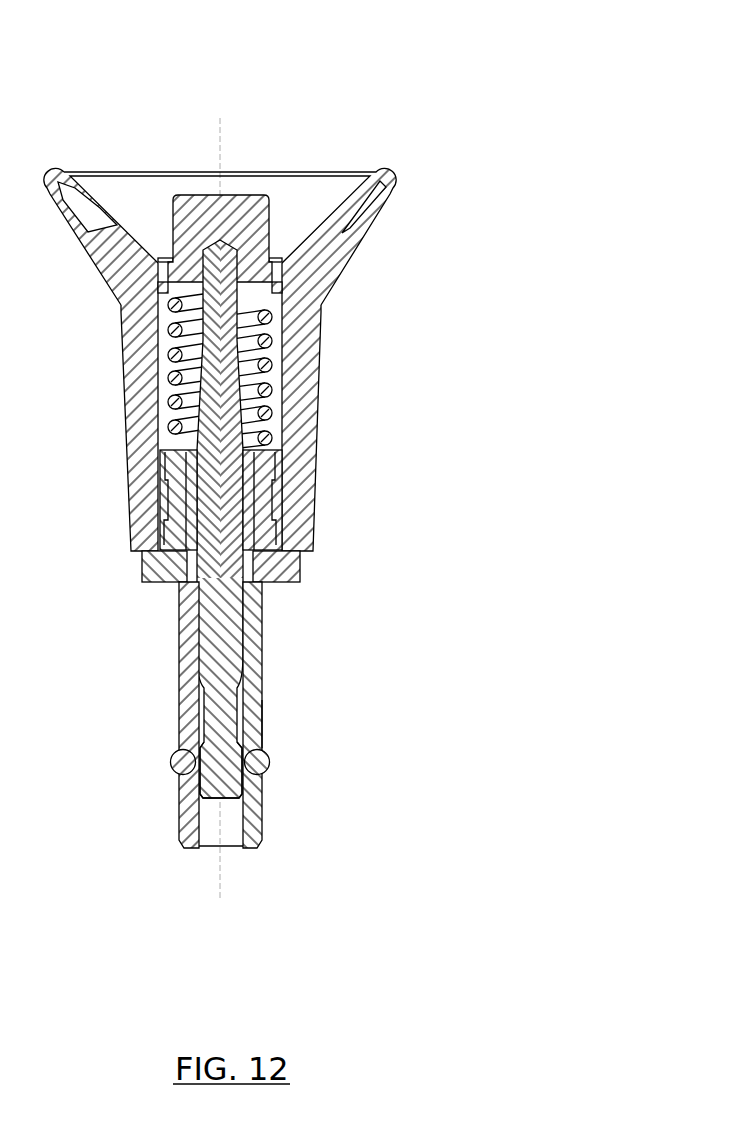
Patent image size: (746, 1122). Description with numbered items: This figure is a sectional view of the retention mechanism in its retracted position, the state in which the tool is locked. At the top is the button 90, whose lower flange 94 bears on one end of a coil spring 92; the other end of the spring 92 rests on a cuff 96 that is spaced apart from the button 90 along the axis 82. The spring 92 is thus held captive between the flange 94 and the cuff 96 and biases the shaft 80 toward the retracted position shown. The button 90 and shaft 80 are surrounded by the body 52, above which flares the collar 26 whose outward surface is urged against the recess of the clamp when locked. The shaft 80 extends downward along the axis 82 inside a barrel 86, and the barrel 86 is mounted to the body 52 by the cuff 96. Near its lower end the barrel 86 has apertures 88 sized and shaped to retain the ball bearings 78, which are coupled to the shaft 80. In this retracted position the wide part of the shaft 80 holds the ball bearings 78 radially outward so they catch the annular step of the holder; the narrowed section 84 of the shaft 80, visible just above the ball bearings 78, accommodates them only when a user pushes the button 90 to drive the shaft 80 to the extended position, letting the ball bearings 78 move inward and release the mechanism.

The collar 26 is at (342, 233).
The body 52 is at (138, 408).
The ball bearings 78 is at (260, 764).
The shaft 80 is at (200, 657).
The axis 82 is at (220, 147).
The narrowed section 84 is at (213, 716).
The barrel 86 is at (179, 616).
The apertures 88 is at (263, 740).
The button 90 is at (255, 213).
The spring 92 is at (270, 367).
The flange 94 is at (280, 292).
The cuff 96 is at (266, 482).